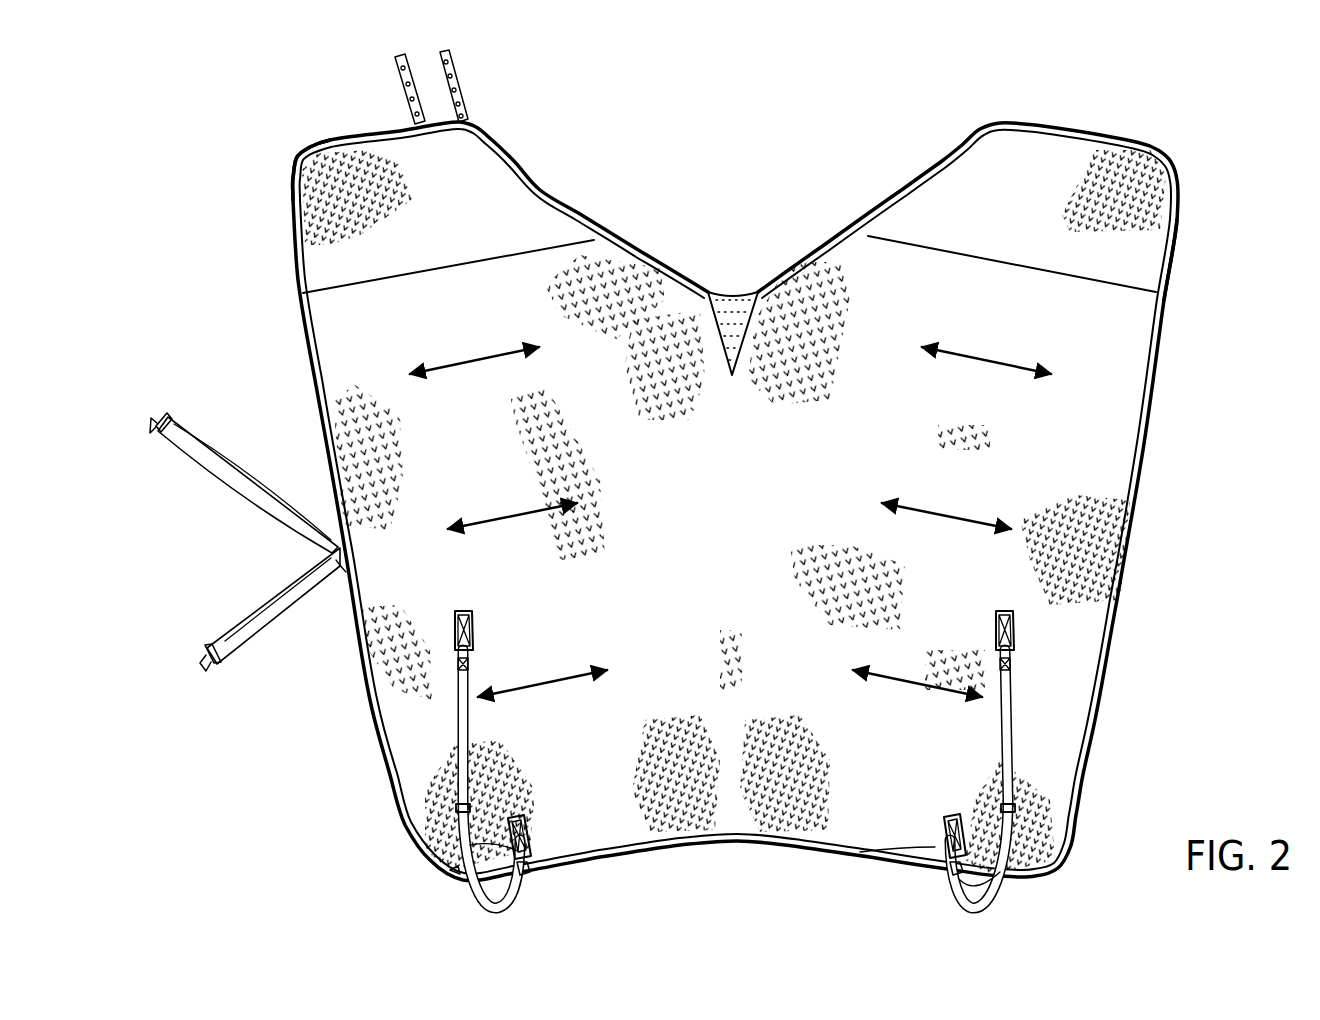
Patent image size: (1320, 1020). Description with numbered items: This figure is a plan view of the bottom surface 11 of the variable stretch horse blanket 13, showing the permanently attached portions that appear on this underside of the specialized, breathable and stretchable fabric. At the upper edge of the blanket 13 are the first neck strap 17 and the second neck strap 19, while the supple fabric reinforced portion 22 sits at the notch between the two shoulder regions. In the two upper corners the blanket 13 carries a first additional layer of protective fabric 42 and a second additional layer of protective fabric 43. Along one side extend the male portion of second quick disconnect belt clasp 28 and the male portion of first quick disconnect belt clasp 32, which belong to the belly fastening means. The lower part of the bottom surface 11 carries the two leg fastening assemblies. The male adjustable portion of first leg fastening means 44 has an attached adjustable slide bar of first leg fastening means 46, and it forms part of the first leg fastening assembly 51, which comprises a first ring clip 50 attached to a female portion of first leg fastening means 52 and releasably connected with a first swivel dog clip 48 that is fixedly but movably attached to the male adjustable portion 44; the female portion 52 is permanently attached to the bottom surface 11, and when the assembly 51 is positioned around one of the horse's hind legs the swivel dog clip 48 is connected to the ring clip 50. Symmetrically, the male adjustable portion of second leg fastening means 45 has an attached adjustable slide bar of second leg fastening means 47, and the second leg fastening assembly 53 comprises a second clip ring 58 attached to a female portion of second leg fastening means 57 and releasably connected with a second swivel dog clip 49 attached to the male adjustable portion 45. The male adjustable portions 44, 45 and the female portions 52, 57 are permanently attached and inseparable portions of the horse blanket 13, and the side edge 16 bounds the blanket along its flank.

The bottom surface 11 is at (1128, 425).
The variable stretch horse blanket 13 is at (290, 163).
The side edge 16 is at (1170, 243).
The first neck strap 17 is at (395, 60).
The second neck strap 19 is at (455, 66).
The supple fabric reinforced portion 22 is at (732, 290).
The male portion of second quick disconnect belt clasp 28 is at (156, 421).
The male portion of first quick disconnect belt clasp 32 is at (204, 664).
The first additional layer of protective fabric 42 is at (1042, 143).
The second additional layer of protective fabric 43 is at (348, 170).
The male adjustable portion of first leg fastening means 44 is at (1012, 743).
The male adjustable portion of second leg fastening means 45 is at (455, 728).
The adjustable slide bar of first leg fastening means 46 is at (1016, 808).
The adjustable slide bar of second leg fastening means 47 is at (455, 808).
The first swivel dog clip 48 is at (958, 862).
The second swivel dog clip 49 is at (486, 868).
The first ring clip 50 is at (948, 868).
The first leg fastening assembly 51 is at (1005, 870).
The female portion of first leg fastening means 52 is at (937, 847).
The second leg fastening assembly 53 is at (524, 872).
The female portion of second leg fastening means 57 is at (533, 846).
The second clip ring 58 is at (520, 855).